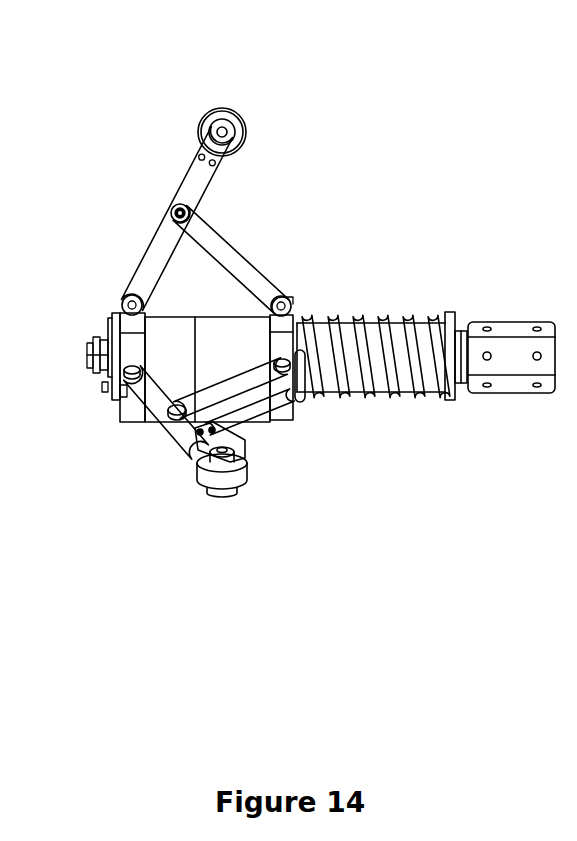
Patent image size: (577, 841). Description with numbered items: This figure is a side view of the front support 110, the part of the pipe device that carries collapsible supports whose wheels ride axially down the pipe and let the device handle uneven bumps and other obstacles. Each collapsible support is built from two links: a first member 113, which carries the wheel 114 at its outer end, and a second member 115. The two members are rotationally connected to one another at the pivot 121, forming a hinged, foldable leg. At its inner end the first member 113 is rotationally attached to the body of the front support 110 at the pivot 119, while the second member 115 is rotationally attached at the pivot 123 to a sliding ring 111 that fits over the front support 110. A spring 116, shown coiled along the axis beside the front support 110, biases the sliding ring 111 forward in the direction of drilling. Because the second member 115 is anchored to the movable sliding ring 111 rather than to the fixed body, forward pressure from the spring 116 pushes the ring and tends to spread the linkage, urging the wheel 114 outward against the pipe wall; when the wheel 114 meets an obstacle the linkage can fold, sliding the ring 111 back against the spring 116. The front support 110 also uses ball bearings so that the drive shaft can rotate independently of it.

The front support 110 is at (328, 115).
The sliding ring 111 is at (277, 340).
The first member 113 is at (172, 182).
The wheel 114 is at (207, 108).
The second member 115 is at (240, 247).
The spring 116 is at (397, 357).
The rotational attachment of first member to front support 119 is at (123, 295).
The rotational connection of first and second members 121 is at (167, 212).
The rotational attachment of second member to sliding ring 123 is at (282, 297).